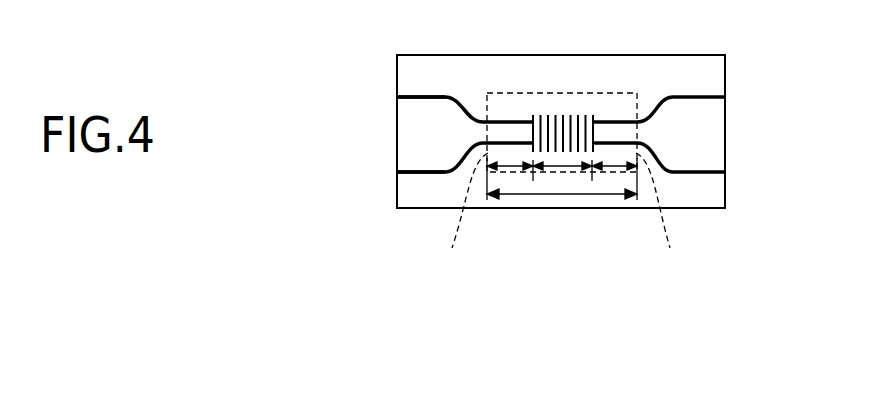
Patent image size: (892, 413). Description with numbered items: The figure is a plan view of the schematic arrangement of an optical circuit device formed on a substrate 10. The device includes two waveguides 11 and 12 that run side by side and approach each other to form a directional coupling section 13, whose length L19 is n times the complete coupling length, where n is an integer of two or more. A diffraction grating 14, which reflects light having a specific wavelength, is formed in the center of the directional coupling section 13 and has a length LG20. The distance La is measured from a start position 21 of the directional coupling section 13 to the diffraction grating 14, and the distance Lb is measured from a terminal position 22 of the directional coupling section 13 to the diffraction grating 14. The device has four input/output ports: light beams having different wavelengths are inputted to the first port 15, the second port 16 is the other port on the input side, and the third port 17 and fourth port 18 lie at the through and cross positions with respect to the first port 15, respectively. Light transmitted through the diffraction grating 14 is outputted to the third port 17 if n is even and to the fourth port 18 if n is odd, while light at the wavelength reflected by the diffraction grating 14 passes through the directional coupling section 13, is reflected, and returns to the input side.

The substrate 10 is at (713, 208).
The waveguide 11 is at (425, 97).
The waveguide 12 is at (408, 208).
The directional coupling section 13 is at (525, 93).
The diffraction grating 14 is at (565, 115).
The first port 15 is at (397, 99).
The second port 16 is at (397, 174).
The third port 17 is at (725, 97).
The fourth port 18 is at (725, 170).
The start position 21 is at (461, 215).
The terminal position 22 is at (664, 215).
The distance La is at (512, 166).
The length LG20 is at (570, 166).
The distance Lb is at (612, 168).
The length L19 is at (545, 196).